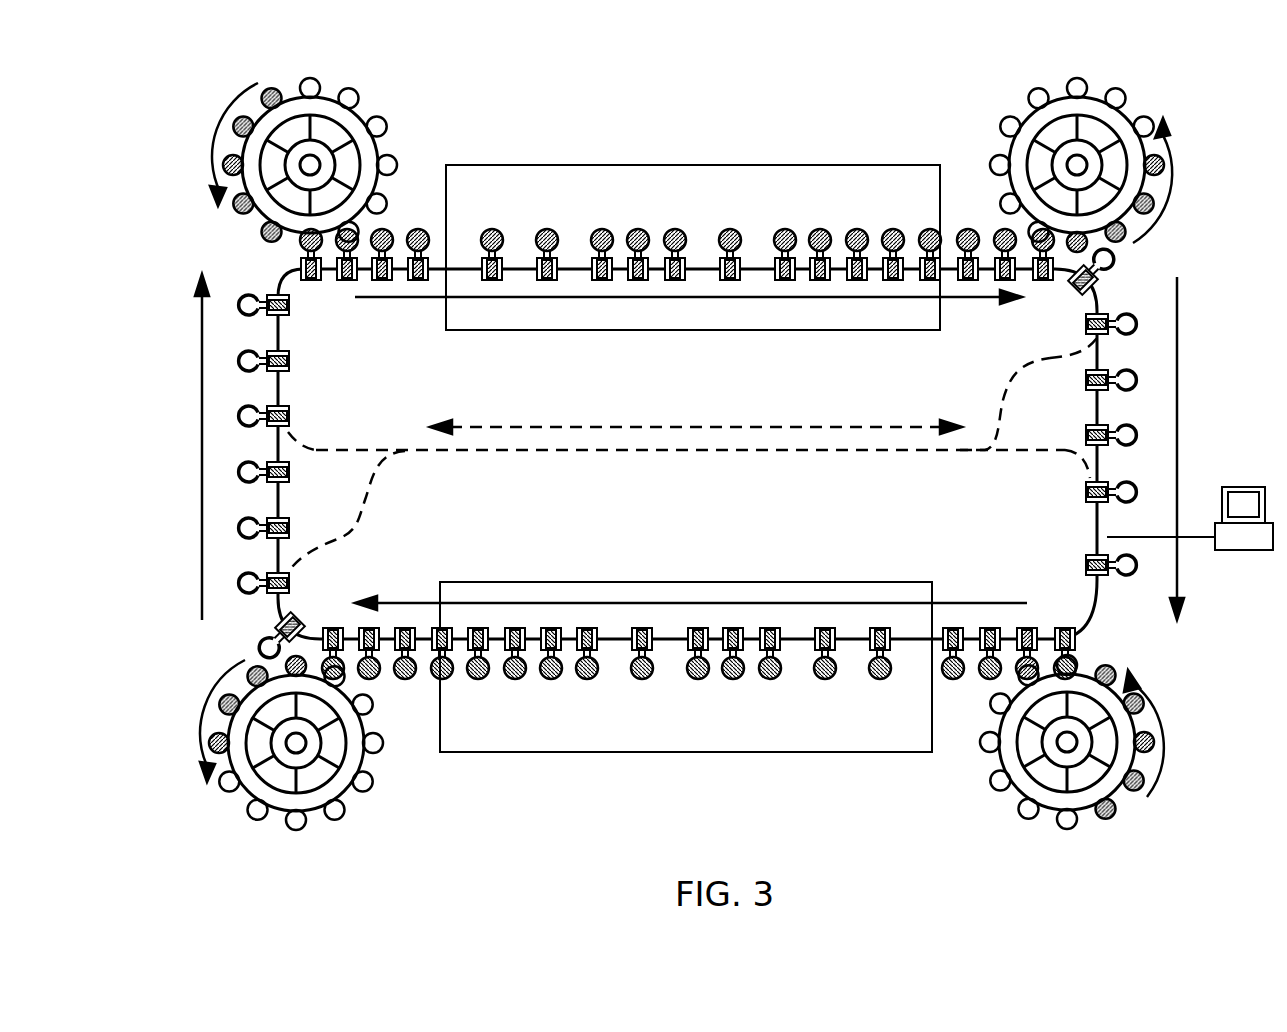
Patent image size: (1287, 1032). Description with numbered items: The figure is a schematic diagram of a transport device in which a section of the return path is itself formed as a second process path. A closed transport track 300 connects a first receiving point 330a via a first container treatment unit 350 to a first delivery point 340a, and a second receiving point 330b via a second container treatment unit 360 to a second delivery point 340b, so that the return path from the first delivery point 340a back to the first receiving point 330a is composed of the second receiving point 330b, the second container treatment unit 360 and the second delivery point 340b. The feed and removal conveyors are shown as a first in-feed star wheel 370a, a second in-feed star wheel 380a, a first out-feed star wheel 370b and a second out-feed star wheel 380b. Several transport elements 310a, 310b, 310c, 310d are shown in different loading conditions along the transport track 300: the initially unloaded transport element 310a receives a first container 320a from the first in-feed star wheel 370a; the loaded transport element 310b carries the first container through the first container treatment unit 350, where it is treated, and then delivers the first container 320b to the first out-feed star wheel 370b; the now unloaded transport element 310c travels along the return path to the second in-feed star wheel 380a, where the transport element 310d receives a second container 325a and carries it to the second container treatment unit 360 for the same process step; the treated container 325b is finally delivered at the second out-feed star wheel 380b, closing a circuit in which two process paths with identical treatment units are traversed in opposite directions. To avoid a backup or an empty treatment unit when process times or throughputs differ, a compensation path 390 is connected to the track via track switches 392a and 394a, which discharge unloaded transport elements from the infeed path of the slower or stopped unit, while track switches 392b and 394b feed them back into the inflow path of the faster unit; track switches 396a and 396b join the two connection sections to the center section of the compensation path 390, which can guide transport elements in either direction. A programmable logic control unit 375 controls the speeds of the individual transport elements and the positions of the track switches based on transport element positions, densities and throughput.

The transport track 300 is at (278, 496).
The transport element 310a is at (290, 361).
The transport element 310b is at (383, 281).
The transport element 310c is at (1085, 322).
The transport element 310d is at (1030, 628).
The first container 320a is at (230, 166).
The first container 320b is at (1157, 162).
The second container 325a is at (1148, 743).
The second container 325b is at (212, 742).
The first receiving point 330a is at (265, 255).
The second receiving point 330b is at (1118, 641).
The first delivery point 340a is at (1120, 252).
The second delivery point 340b is at (262, 640).
The first container treatment unit 350 is at (714, 210).
The second container treatment unit 360 is at (709, 730).
The first in-feed star wheel 370a is at (340, 133).
The first out-feed star wheel 370b is at (1045, 131).
The programmable logic control unit 375 is at (1245, 552).
The second in-feed star wheel 380a is at (1036, 774).
The second out-feed star wheel 380b is at (328, 772).
The compensation path 390 is at (690, 452).
The track switch 392a is at (1100, 345).
The track switch 392b is at (290, 428).
The track switch 394a is at (292, 578).
The track switch 394b is at (1086, 486).
The track switch 396a is at (962, 452).
The track switch 396b is at (405, 452).